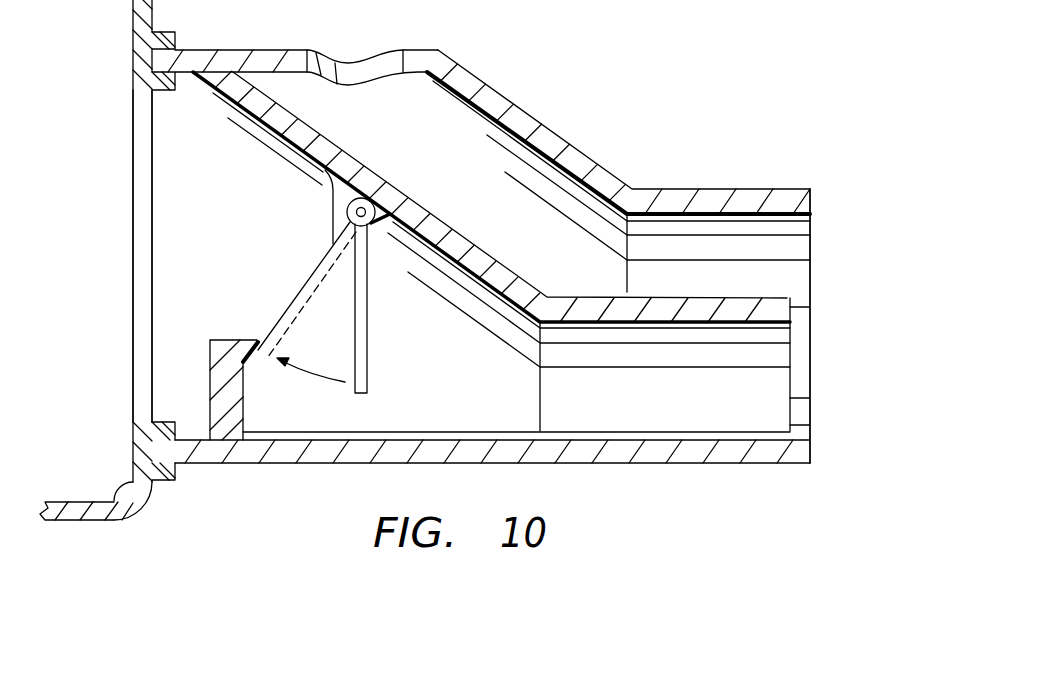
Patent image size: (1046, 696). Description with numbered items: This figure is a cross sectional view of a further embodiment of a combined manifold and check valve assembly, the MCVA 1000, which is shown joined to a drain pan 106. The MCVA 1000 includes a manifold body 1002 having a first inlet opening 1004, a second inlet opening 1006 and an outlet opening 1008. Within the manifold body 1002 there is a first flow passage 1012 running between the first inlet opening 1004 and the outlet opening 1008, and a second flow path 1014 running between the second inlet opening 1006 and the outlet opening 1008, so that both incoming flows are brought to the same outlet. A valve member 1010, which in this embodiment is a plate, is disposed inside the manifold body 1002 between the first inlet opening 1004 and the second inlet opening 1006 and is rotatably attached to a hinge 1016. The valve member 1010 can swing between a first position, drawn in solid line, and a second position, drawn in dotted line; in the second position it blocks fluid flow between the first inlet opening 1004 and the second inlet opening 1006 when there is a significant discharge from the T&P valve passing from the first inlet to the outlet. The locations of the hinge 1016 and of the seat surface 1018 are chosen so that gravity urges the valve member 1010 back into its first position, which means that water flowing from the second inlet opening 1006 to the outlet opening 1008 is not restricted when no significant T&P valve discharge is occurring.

The drain pan 106 is at (83, 502).
The manifold and check valve assembly 1000 is at (642, 123).
The manifold body 1002 is at (541, 121).
The first inlet opening 1004 is at (372, 109).
The second inlet opening 1006 is at (183, 260).
The outlet opening 1008 is at (832, 270).
The valve member 1010 is at (368, 349).
The first flow passage 1012 is at (477, 180).
The second flow path 1014 is at (688, 410).
The hinge 1016 is at (348, 208).
The seat surface 1018 is at (246, 362).